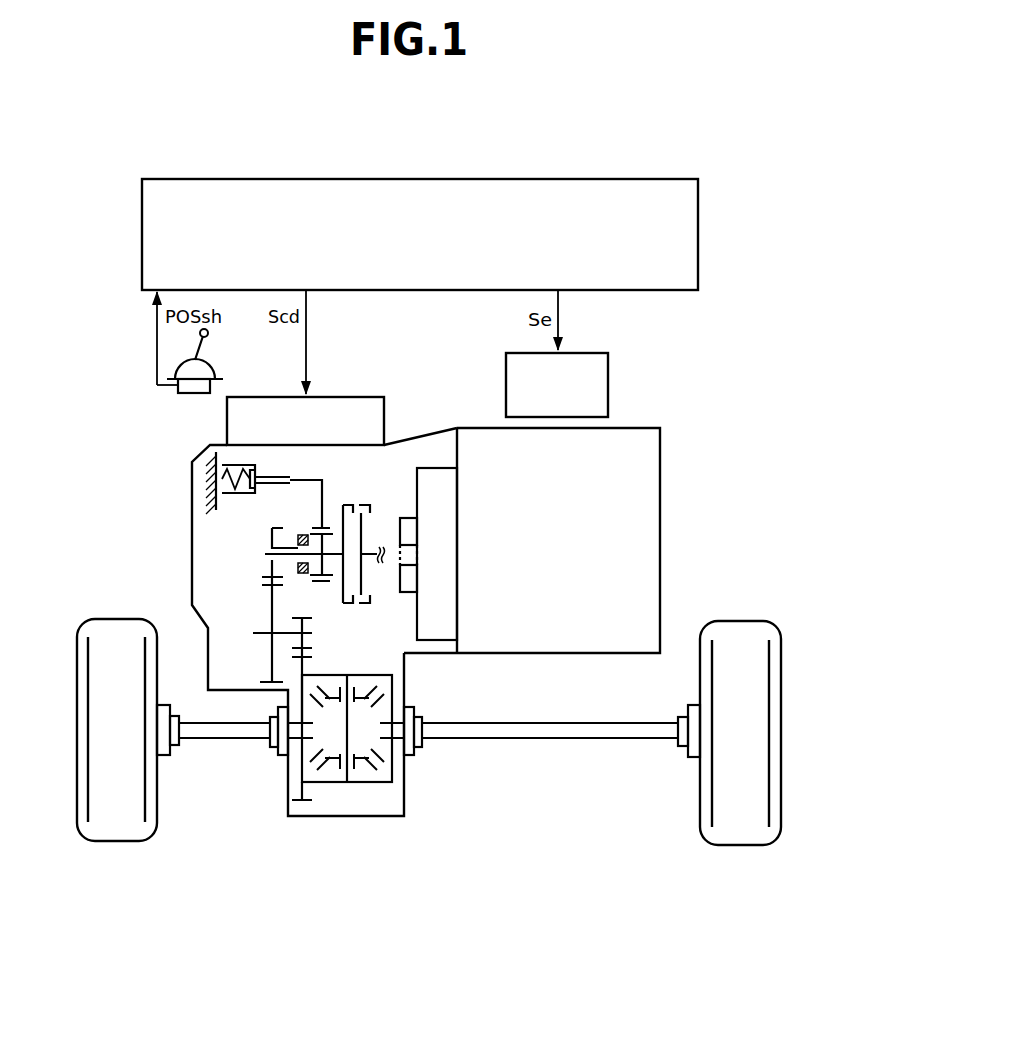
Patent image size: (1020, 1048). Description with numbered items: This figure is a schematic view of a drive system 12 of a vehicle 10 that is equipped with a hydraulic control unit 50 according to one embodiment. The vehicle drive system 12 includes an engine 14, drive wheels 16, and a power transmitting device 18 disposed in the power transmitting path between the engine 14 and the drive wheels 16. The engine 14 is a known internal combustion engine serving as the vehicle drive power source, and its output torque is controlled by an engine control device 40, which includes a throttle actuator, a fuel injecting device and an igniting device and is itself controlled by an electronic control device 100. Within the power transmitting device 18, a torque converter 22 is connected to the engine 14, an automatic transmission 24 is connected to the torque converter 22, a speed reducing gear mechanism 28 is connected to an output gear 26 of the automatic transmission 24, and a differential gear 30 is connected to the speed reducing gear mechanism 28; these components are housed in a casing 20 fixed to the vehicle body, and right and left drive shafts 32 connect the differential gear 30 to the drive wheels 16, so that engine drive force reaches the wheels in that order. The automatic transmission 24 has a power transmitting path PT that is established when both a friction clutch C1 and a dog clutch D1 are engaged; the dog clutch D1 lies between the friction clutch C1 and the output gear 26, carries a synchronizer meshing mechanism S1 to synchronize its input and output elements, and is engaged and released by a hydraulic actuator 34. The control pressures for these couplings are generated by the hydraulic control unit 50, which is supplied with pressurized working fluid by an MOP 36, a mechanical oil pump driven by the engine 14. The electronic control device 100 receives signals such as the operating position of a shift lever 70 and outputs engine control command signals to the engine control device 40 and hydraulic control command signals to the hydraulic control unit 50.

The vehicle 10 is at (676, 144).
The vehicle drive system 12 is at (641, 353).
The engine 14 is at (614, 443).
The drive wheels 16 is at (110, 630).
The power transmitting device 18 is at (250, 858).
The casing 20 is at (206, 458).
The torque converter 22 is at (430, 480).
The automatic transmission 24 is at (212, 548).
The output gear 26 is at (265, 532).
The speed reducing gear mechanism 28 is at (244, 622).
The differential gear 30 is at (358, 808).
The drive shafts 32 is at (195, 732).
The hydraulic actuator 34 is at (302, 465).
The MOP 36 is at (404, 524).
The engine control device 40 is at (582, 354).
The hydraulic control unit 50 is at (322, 404).
The shift lever 70 is at (205, 344).
The electronic control device 100 is at (180, 193).
The friction clutch C1 is at (358, 543).
The dog clutch D1 is at (316, 600).
The synchronizer meshing mechanism S1 is at (303, 590).
The power transmitting path PT is at (378, 576).